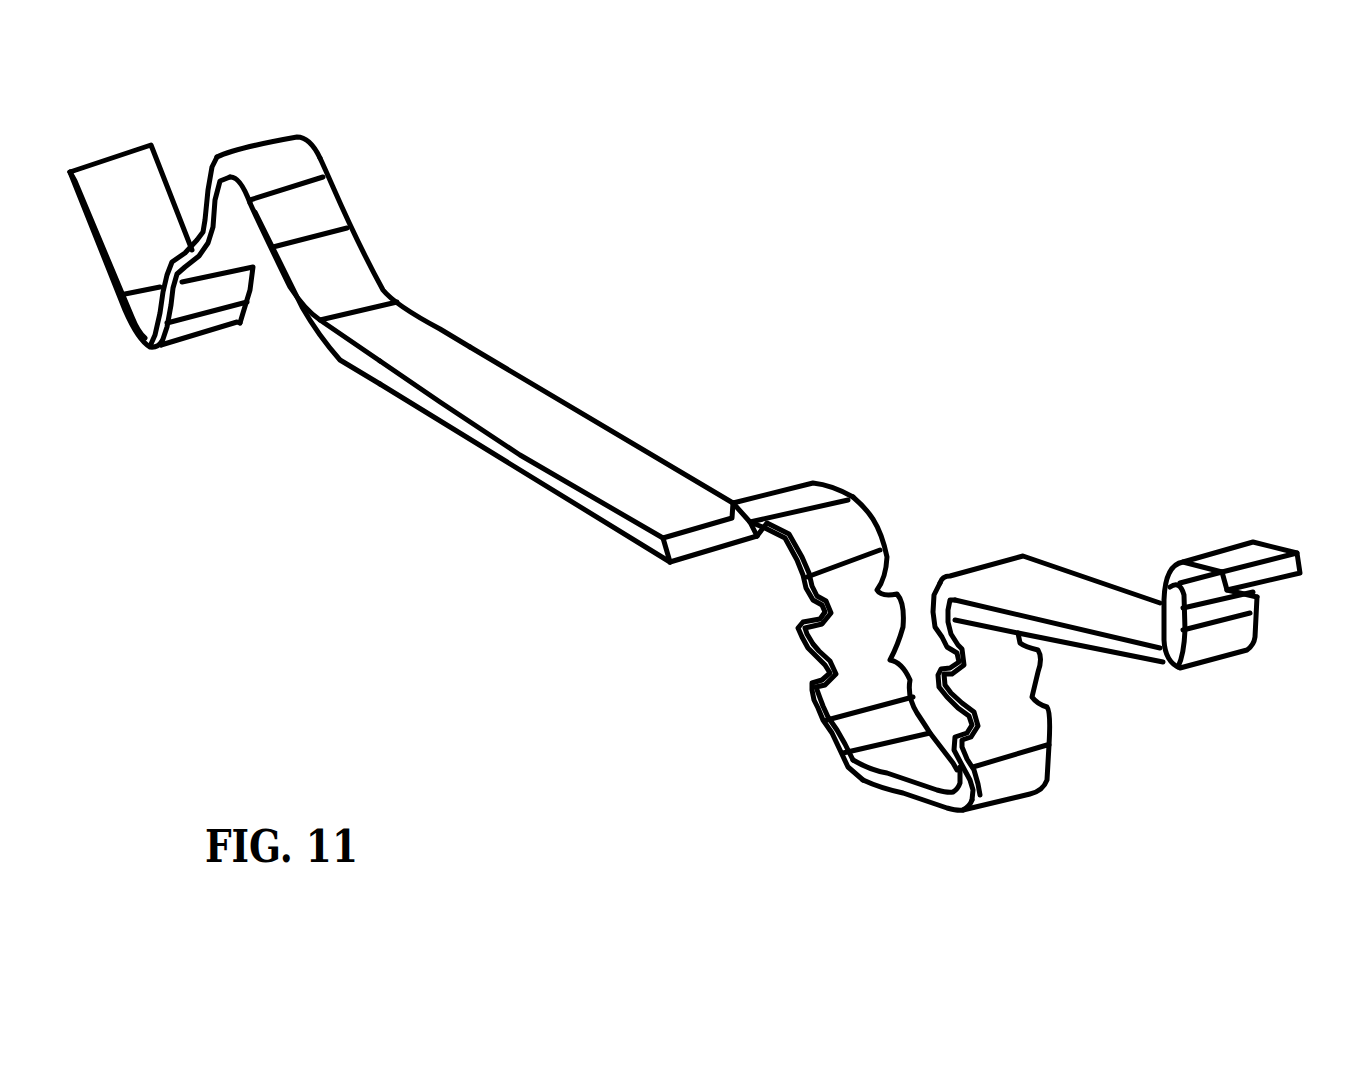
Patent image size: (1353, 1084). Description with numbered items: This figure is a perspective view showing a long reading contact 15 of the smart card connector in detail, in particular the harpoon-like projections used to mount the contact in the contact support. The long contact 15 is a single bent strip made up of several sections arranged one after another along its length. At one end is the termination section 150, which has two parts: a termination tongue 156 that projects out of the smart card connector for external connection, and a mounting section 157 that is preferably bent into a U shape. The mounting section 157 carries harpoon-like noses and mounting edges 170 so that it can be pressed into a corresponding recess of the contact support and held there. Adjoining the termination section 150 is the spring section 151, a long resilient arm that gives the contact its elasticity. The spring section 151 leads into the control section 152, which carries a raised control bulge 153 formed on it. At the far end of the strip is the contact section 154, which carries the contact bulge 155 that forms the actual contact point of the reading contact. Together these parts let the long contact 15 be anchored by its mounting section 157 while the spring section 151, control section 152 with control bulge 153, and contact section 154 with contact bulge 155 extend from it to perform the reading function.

The long reading contact 15 is at (683, 481).
The termination section 150 is at (981, 677).
The spring section 151 is at (636, 424).
The control section 152 is at (368, 201).
The control bulge 153 is at (277, 155).
The contact section 154 is at (117, 342).
The contact bulge 155 is at (188, 338).
The termination tongue 156 is at (1262, 555).
The mounting section 157 is at (901, 812).
The noses and mounting edges 170 is at (803, 633).